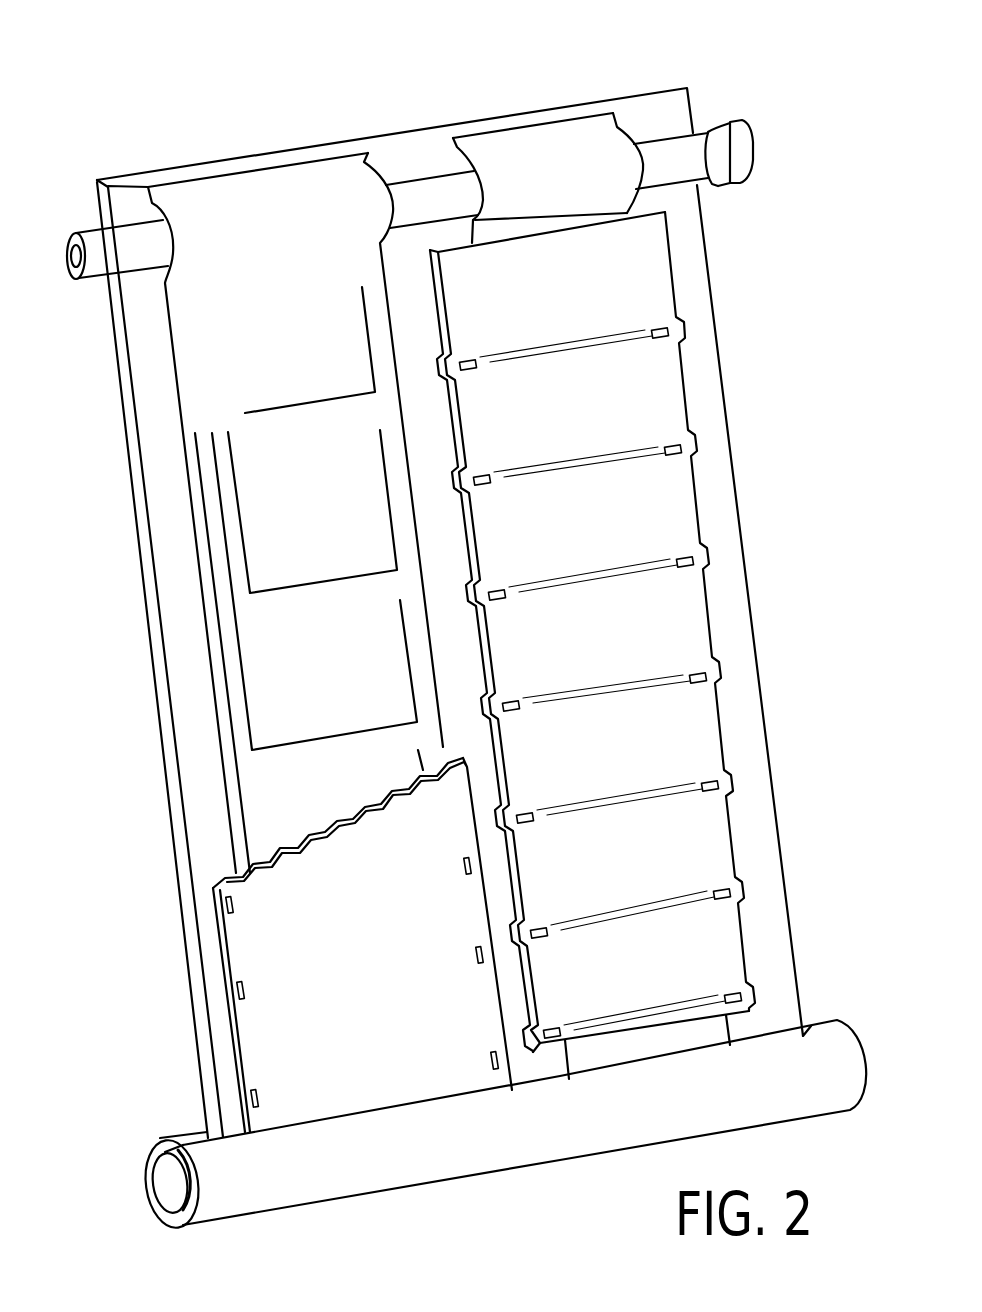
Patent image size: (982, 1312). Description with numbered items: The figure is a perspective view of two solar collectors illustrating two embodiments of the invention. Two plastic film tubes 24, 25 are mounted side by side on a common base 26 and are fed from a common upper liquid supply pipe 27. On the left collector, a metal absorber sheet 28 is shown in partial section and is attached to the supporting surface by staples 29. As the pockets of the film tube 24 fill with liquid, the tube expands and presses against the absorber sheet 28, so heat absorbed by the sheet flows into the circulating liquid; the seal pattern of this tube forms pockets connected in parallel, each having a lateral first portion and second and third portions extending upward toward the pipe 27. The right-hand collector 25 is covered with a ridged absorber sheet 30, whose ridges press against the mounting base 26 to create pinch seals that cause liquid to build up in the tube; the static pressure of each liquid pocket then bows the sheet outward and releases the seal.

The film tube 24 is at (276, 166).
The film tube 25 is at (565, 110).
The common base 26 is at (655, 91).
The common upper liquid supply pipe 27 is at (97, 281).
The metal absorber sheet 28 is at (362, 945).
The staples 29 is at (245, 987).
The ridged absorber sheet 30 is at (592, 632).